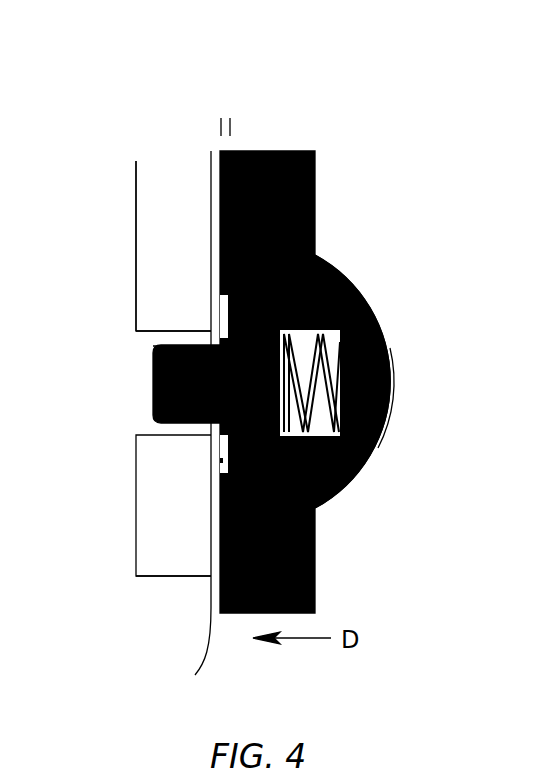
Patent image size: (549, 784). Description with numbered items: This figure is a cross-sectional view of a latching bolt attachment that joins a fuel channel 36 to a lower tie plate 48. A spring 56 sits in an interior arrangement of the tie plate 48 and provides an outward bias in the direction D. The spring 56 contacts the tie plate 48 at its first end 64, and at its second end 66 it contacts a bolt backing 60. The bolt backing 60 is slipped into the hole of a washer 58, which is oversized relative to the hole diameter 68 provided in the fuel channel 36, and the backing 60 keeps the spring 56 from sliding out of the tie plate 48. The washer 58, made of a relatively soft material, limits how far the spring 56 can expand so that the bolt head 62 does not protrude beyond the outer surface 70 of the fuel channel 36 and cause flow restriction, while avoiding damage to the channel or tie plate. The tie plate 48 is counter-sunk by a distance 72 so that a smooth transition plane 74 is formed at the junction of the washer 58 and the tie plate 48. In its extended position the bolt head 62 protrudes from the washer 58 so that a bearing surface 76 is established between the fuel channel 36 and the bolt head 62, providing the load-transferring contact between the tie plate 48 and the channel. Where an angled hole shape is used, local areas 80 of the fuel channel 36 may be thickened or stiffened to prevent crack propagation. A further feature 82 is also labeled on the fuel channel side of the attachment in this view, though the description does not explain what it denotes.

The fuel channel 36 is at (145, 197).
The tie plate 48 is at (290, 145).
The spring 56 is at (310, 372).
The washer 58 is at (217, 323).
The bolt backing 60 is at (308, 240).
The bolt head 62 is at (145, 376).
The first end 64 is at (373, 423).
The second end 66 is at (220, 425).
The hole diameter 68 is at (127, 330).
The outer surface 70 is at (127, 220).
The distance 72 is at (218, 105).
The smooth transition plane 74 is at (188, 426).
The bearing surface 76 is at (145, 342).
The local areas 80 is at (128, 427).
The flange 82 is at (203, 460).